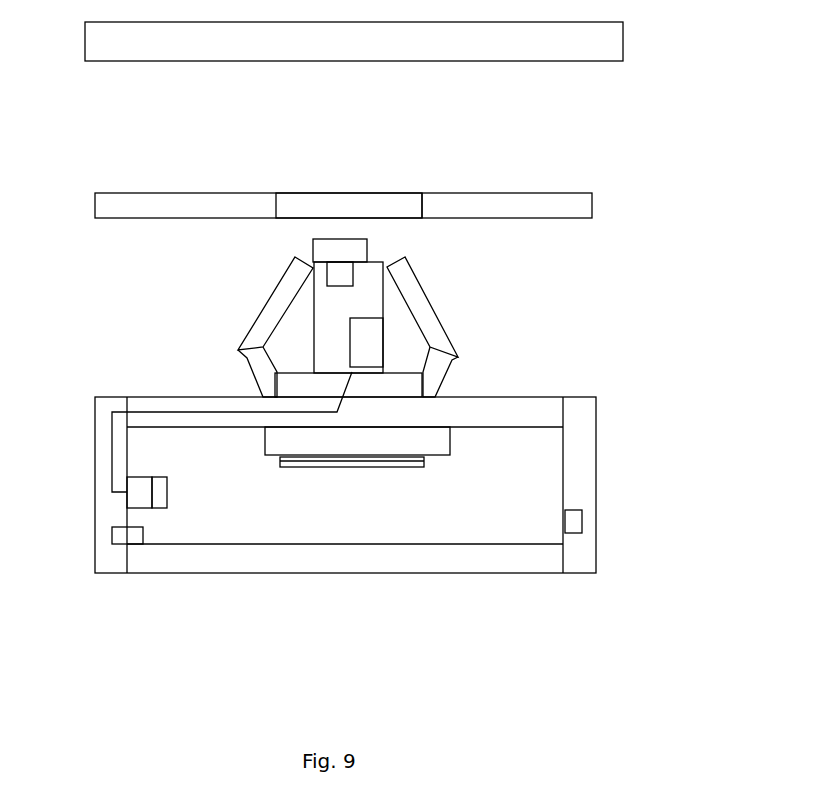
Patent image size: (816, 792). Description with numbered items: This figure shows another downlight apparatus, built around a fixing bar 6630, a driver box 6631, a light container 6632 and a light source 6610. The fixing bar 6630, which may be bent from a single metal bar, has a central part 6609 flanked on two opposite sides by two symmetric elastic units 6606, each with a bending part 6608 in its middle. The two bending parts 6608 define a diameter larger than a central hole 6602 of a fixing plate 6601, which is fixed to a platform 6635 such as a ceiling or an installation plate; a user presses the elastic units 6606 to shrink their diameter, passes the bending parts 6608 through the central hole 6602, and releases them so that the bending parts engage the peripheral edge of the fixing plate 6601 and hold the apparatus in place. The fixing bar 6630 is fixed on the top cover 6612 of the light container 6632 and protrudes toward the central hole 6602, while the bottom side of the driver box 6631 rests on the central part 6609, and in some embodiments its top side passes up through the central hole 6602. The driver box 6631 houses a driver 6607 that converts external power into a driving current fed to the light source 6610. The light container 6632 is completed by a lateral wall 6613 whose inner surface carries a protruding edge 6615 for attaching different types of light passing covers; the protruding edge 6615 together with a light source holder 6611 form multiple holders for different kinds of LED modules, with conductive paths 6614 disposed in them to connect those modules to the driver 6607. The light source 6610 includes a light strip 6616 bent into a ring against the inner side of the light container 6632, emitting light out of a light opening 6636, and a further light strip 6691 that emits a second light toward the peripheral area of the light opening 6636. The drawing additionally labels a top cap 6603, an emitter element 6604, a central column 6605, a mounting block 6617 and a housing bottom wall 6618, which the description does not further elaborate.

The platform 6635 is at (608, 54).
The fixing plate 6601 is at (233, 203).
The central hole 6602 is at (337, 202).
The top cap 6603 is at (340, 250).
The emitter element 6604 is at (342, 280).
The central column 6605 is at (327, 255).
The elastic units 6606 is at (418, 303).
The driver 6607 is at (367, 342).
The bending parts 6608 is at (447, 350).
The central part 6609 is at (400, 388).
The fixing bar 6630 is at (253, 335).
The driver box 6631 is at (322, 315).
The light container 6632 is at (115, 405).
The top cover 6612 is at (522, 410).
The lateral wall 6613 is at (579, 467).
The conductive paths 6614 is at (117, 467).
The protruding edge 6615 is at (135, 492).
The light strip 6616 is at (158, 491).
The mounting block 6617 is at (123, 543).
The housing bottom wall 6618 is at (217, 568).
The light opening 6636 is at (475, 532).
The light source holder 6611 is at (295, 445).
The light source 6610 is at (397, 470).
The light strip 6691 is at (572, 526).